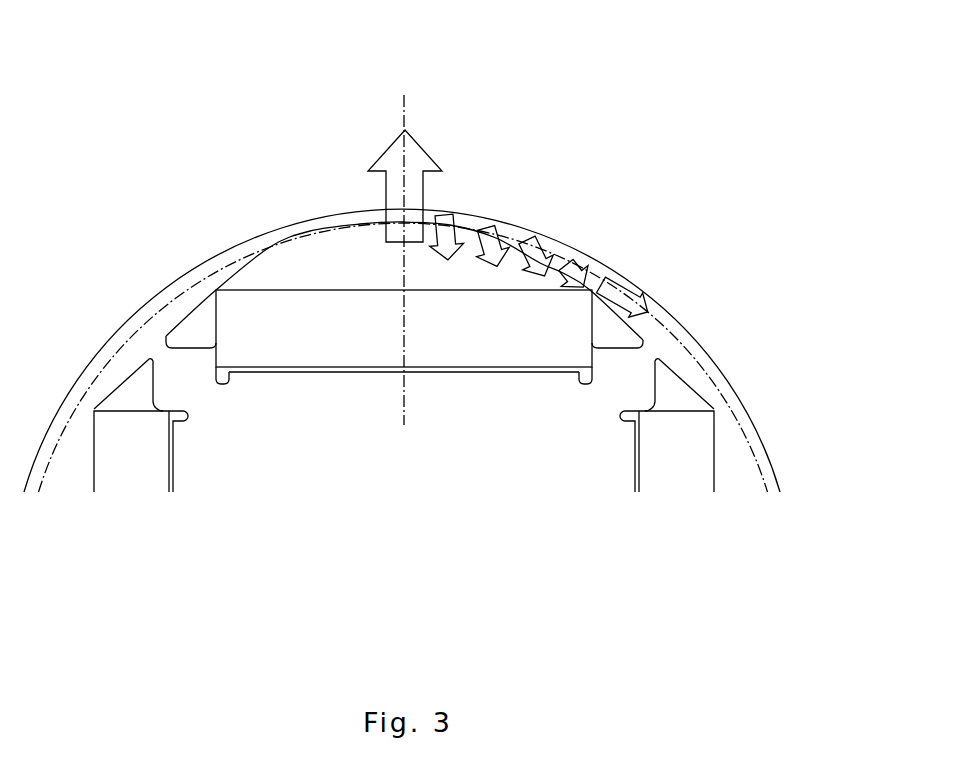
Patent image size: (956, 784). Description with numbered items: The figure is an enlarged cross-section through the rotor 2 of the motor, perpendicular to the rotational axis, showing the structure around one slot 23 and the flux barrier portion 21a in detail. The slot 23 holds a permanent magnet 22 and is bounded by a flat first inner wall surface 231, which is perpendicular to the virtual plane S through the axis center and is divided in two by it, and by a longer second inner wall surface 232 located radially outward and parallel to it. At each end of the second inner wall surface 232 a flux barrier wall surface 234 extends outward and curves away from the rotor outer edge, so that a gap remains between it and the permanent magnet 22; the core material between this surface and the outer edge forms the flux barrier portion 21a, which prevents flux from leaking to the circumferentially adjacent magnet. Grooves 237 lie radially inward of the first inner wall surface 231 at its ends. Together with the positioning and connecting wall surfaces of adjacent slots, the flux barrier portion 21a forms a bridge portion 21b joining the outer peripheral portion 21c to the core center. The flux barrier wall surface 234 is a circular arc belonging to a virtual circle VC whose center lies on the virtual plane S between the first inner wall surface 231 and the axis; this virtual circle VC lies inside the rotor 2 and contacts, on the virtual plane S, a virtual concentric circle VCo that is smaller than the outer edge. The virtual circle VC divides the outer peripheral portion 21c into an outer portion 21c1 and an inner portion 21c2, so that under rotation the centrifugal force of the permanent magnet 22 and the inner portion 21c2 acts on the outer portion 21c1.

The rotor 2 is at (614, 147).
The flux barrier portion 21a is at (187, 277).
The bridge portion 21b is at (167, 397).
The outer peripheral portion 21c is at (385, 92).
The outer portion 21c1 is at (310, 290).
The inner portion 21c2 is at (348, 268).
The permanent magnet 22 is at (348, 338).
The slot 23 is at (183, 337).
The first inner wall surface 231 is at (465, 372).
The second inner wall surface 232 is at (292, 240).
The flux barrier wall surface 234 is at (185, 313).
The groove 237 is at (222, 385).
The virtual plane S is at (405, 236).
The virtual circle VC is at (230, 245).
The virtual concentric circle VCo is at (210, 253).